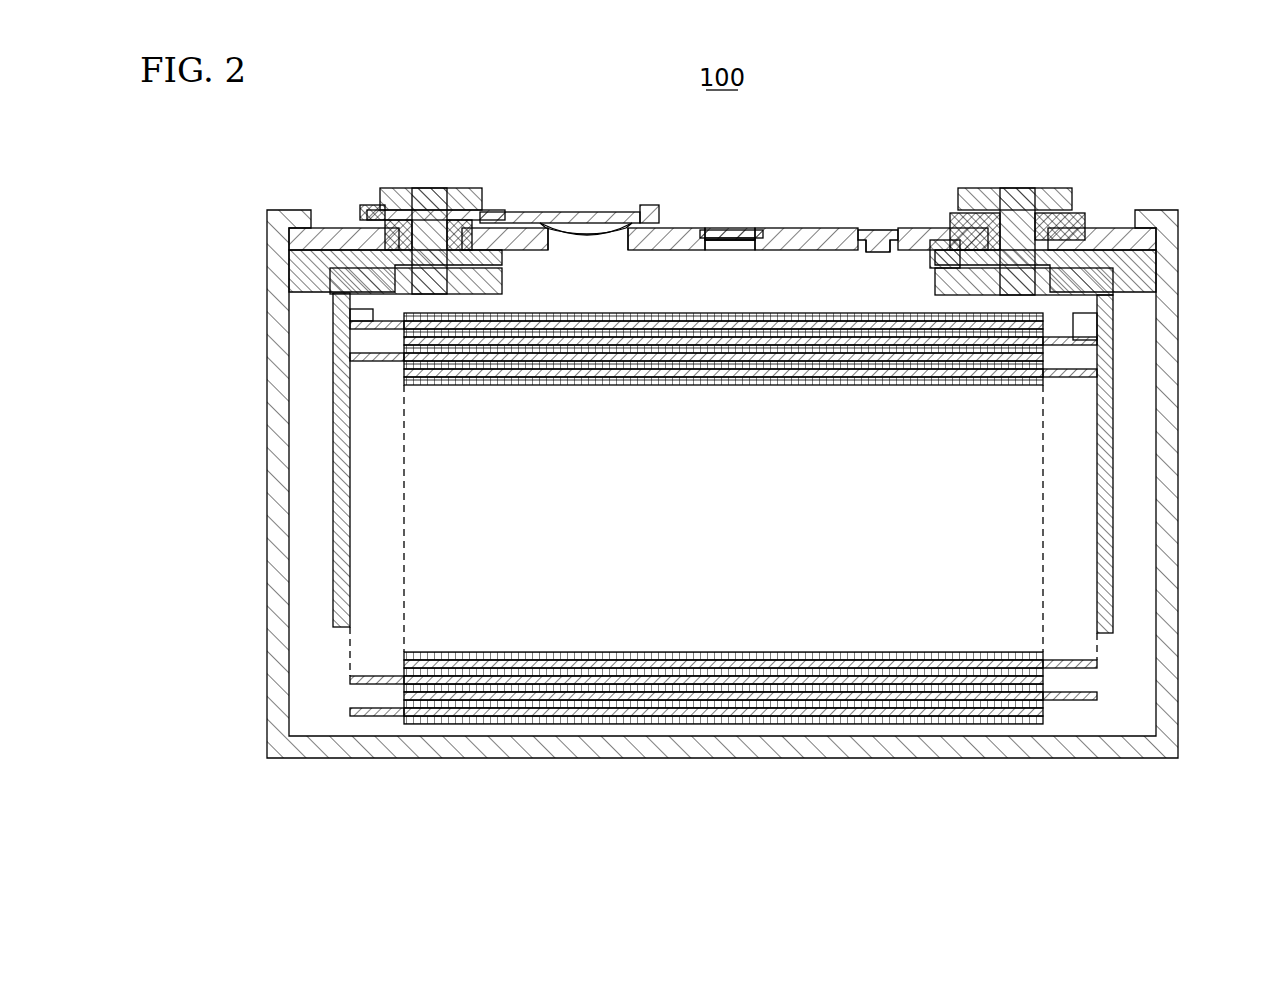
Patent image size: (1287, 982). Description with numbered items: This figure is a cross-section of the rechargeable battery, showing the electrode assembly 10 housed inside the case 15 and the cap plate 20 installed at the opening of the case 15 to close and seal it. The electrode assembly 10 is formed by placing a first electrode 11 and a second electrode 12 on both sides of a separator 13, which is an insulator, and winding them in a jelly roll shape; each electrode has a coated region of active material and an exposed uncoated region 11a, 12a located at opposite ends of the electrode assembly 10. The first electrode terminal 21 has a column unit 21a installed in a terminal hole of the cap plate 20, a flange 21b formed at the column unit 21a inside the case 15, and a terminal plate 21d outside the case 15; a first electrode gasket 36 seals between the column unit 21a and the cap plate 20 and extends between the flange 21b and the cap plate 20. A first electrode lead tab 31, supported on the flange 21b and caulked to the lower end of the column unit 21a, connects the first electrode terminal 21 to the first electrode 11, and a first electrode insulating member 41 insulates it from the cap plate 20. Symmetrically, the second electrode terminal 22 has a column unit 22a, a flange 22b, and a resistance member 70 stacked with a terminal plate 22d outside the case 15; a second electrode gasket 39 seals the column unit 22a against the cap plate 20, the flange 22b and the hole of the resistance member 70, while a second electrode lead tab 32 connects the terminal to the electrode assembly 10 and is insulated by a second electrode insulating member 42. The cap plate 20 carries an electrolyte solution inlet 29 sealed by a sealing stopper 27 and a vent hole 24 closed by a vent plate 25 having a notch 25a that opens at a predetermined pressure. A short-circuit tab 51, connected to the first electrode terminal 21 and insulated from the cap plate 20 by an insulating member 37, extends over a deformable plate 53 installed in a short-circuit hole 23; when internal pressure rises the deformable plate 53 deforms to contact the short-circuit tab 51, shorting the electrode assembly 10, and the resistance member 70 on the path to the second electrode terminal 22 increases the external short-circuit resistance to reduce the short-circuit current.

The electrode assembly 10 is at (719, 566).
The first electrode 11 is at (614, 567).
The uncoated region 11a is at (355, 714).
The second electrode 12 is at (829, 578).
The uncoated region 12a is at (1100, 702).
The separator 13 is at (785, 722).
The case 15 is at (1167, 466).
The cap plate 20 is at (825, 243).
The first electrode terminal 21 is at (347, 207).
The column unit 21a is at (412, 290).
The flange 21b is at (478, 216).
The terminal plate 21d is at (458, 200).
The second electrode terminal 22 is at (1081, 215).
The column unit 22a is at (1020, 292).
The flange 22b is at (942, 240).
The terminal plate 22d is at (1062, 203).
The short-circuit hole 23 is at (612, 252).
The vent hole 24 is at (735, 252).
The vent plate 25 is at (758, 231).
The notch 25a is at (730, 230).
The sealing stopper 27 is at (882, 238).
The electrolyte solution inlet 29 is at (873, 254).
The first electrode lead tab 31 is at (345, 397).
The second electrode lead tab 32 is at (1113, 582).
The first electrode gasket 36 is at (392, 206).
The insulating member 37 is at (650, 205).
The second electrode gasket 39 is at (978, 222).
The first electrode insulating member 41 is at (300, 254).
The second electrode insulating member 42 is at (1150, 270).
The short-circuit tab 51 is at (546, 212).
The deformable plate 53 is at (590, 234).
The resistance member 70 is at (1078, 224).